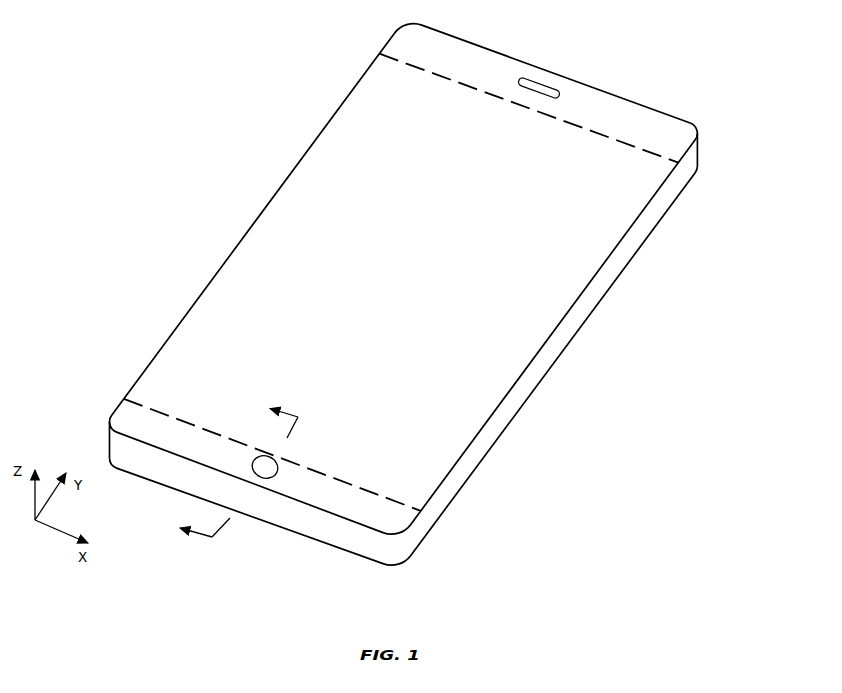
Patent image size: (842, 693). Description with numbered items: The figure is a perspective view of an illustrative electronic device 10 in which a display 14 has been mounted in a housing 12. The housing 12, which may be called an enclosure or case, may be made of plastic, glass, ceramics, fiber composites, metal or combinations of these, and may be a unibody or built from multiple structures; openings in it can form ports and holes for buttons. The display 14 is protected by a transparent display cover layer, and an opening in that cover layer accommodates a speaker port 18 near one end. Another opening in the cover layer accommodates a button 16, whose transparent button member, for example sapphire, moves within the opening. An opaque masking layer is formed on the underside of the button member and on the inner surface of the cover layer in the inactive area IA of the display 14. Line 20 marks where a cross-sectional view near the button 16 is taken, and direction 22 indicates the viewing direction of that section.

The electronic device 10 is at (706, 52).
The housing 12 is at (701, 150).
The display 14 is at (516, 338).
The button 16 is at (266, 479).
The speaker port 18 is at (536, 80).
The line 20 is at (294, 428).
The direction 22 is at (291, 412).
The inactive area IA is at (395, 15).